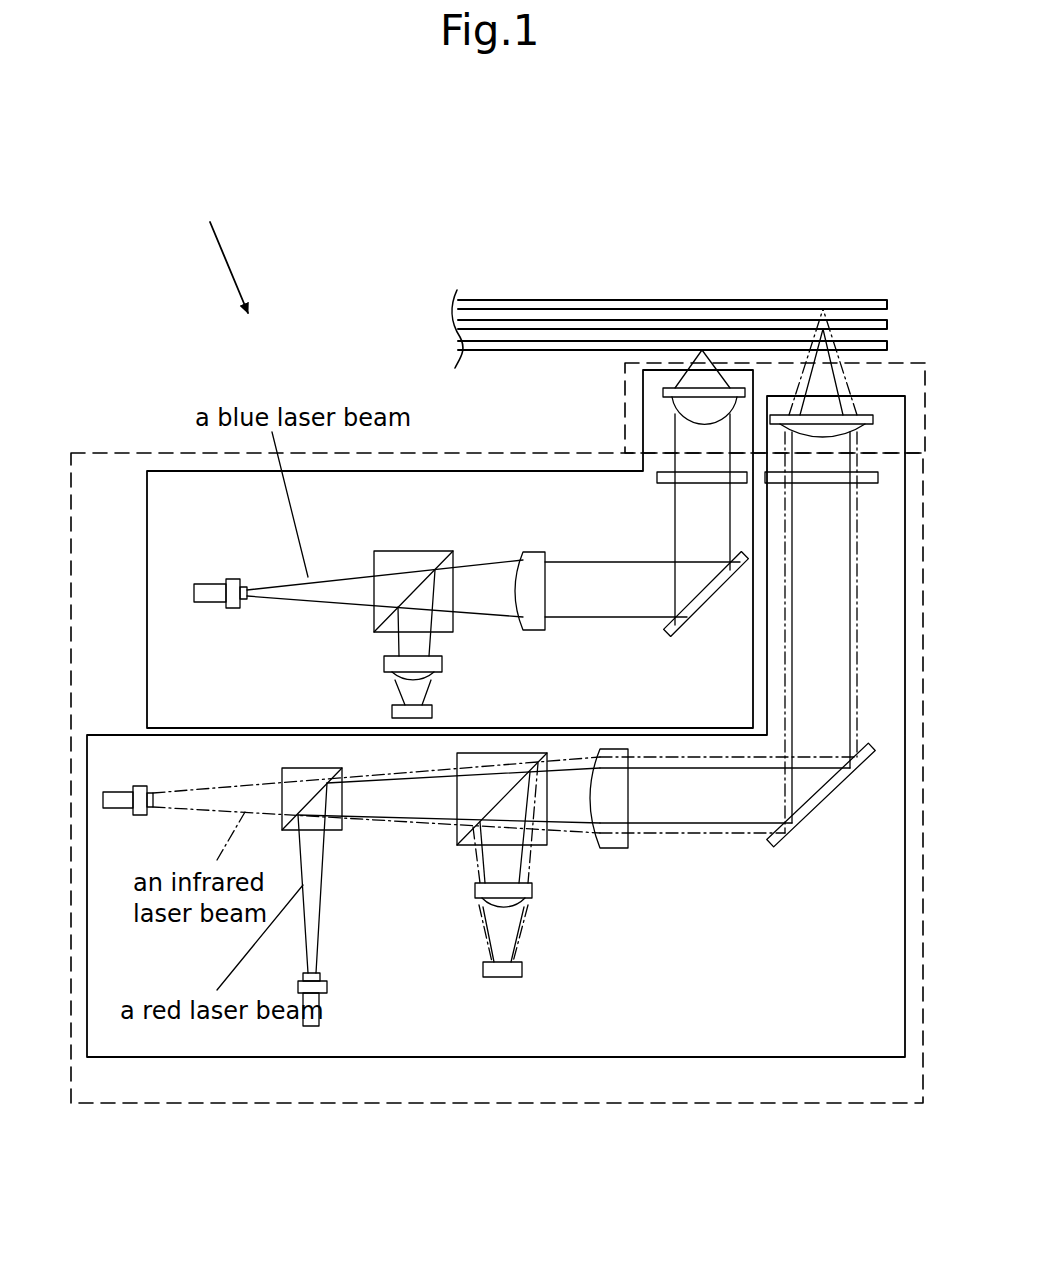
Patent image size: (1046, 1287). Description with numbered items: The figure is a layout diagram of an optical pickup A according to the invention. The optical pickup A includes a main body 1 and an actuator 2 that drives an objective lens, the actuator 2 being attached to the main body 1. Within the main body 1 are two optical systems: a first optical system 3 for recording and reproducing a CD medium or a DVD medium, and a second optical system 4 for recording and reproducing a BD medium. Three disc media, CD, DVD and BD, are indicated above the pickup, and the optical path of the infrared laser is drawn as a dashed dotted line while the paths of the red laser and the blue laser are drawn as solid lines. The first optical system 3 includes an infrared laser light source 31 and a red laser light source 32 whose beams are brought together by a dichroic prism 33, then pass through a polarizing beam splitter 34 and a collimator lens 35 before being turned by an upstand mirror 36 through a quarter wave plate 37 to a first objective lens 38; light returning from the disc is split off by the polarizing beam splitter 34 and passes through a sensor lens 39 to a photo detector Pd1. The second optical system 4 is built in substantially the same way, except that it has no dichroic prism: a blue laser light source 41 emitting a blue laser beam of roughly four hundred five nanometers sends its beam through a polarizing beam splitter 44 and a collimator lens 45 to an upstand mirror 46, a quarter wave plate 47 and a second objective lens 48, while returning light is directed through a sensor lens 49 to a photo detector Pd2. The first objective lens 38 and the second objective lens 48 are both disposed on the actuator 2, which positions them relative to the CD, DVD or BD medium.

The main body 1 is at (87, 452).
The actuator 2 is at (906, 362).
The first optical system 3 is at (235, 1058).
The second optical system 4 is at (147, 583).
The infrared laser light source 31 is at (121, 792).
The red laser light source 32 is at (313, 1010).
The dichroic prism 33 is at (343, 828).
The polarizing beam splitter 34 is at (543, 847).
The collimator lens 35 is at (617, 837).
The upstand mirror 36 is at (808, 820).
The quarter wave plate 37 is at (865, 480).
The first objective lens 38 is at (863, 425).
The sensor lens 39 is at (528, 893).
The blue laser light source 41 is at (217, 593).
The polarizing beam splitter 44 is at (397, 559).
The collimator lens 45 is at (530, 573).
The upstand mirror 46 is at (688, 617).
The quarter wave plate 47 is at (670, 478).
The second objective lens 48 is at (678, 403).
The sensor lens 49 is at (422, 665).
The photo detector Pd1 is at (508, 967).
The photo detector Pd2 is at (405, 710).
The optical pickup A is at (219, 251).
The CD medium CD is at (634, 303).
The DVD medium DVD is at (520, 325).
The BD medium BD is at (518, 348).